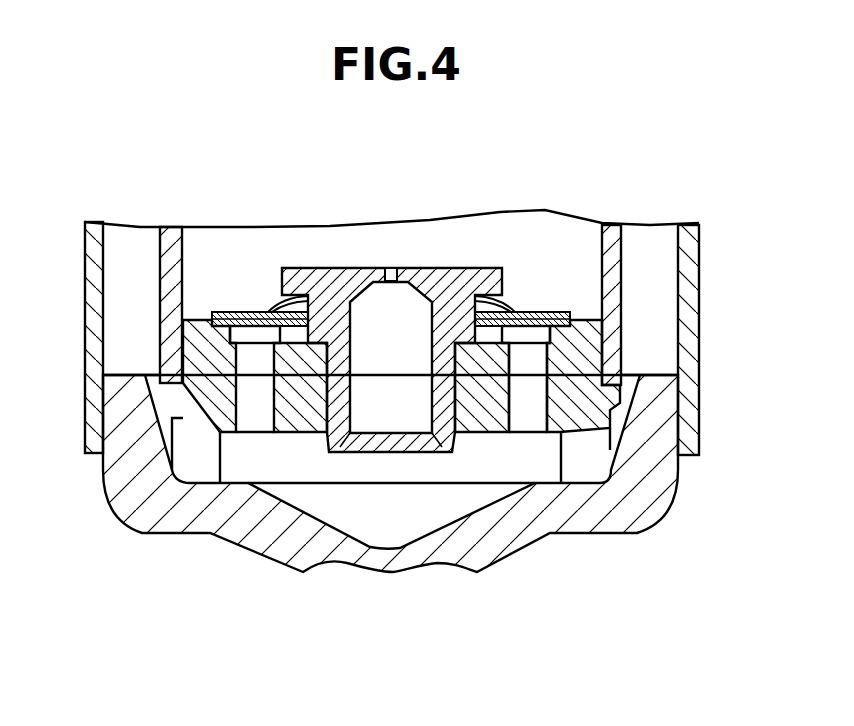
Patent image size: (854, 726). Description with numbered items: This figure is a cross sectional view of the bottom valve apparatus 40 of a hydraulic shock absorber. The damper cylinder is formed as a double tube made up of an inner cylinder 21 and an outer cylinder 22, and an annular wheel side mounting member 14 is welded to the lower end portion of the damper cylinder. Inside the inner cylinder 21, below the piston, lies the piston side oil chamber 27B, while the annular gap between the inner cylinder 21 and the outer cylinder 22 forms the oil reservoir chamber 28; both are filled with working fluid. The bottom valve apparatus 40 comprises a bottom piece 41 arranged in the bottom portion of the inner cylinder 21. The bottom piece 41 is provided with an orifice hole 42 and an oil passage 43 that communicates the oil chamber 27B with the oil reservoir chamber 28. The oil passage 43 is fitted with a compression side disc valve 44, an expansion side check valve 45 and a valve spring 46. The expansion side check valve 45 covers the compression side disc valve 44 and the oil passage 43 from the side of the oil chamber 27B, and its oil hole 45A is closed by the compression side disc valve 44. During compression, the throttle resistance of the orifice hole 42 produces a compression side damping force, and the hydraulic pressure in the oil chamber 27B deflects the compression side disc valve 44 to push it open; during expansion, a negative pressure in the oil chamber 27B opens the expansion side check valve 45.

The wheel side mounting member 14 is at (195, 513).
The inner cylinder 21 is at (172, 243).
The outer cylinder 22 is at (98, 243).
The piston side oil chamber 27B is at (515, 238).
The oil reservoir chamber 28 is at (648, 285).
The bottom valve apparatus 40 is at (315, 228).
The bottom piece 41 is at (207, 378).
The orifice hole 42 is at (391, 268).
The oil passage 43 is at (527, 387).
The compression side disc valve 44 is at (547, 355).
The expansion side check valve 45 is at (555, 343).
The oil hole 45A is at (537, 347).
The valve spring 46 is at (273, 307).